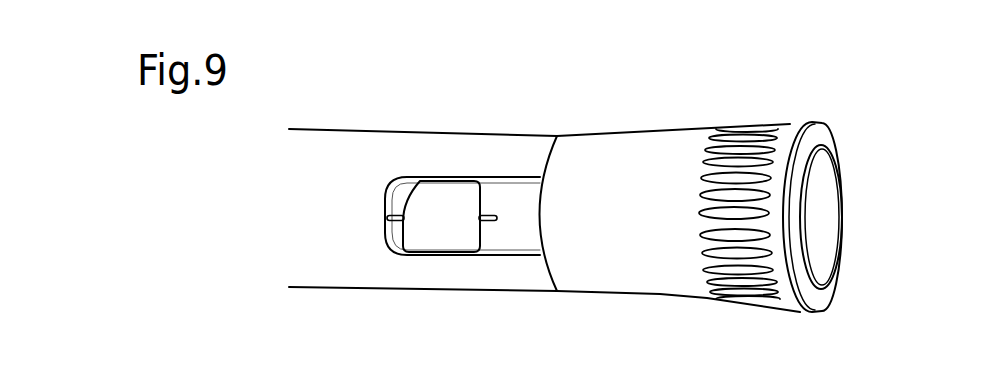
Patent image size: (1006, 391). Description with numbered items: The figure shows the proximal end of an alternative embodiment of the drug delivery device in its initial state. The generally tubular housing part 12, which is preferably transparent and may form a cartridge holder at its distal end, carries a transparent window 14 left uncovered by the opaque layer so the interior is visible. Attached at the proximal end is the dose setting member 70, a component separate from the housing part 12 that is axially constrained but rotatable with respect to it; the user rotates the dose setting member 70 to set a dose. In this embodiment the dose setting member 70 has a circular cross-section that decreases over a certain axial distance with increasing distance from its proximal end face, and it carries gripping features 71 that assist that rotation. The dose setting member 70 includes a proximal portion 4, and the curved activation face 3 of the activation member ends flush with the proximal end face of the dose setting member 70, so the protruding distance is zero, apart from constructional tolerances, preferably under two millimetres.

The activation face 3 is at (840, 172).
The proximal portion 4 is at (738, 296).
The housing part 12 is at (447, 132).
The transparent window 14 is at (453, 218).
The dose setting member 70 is at (602, 135).
The gripping features 71 is at (750, 132).